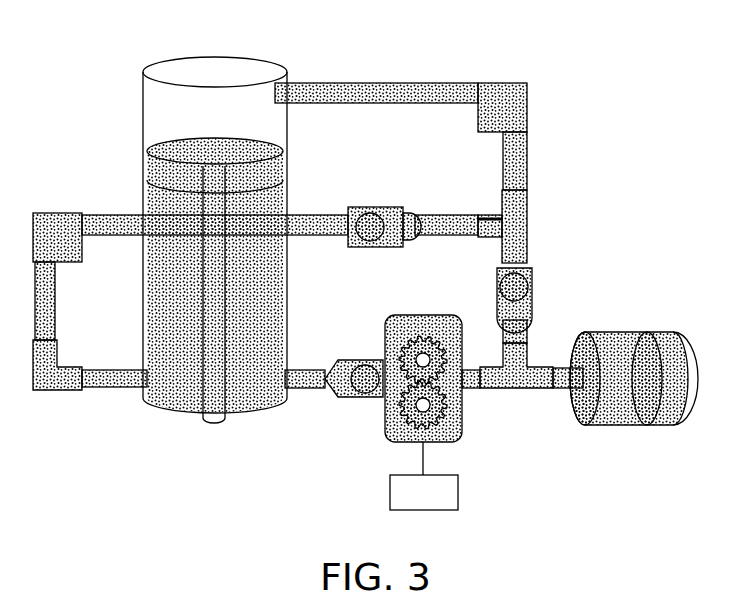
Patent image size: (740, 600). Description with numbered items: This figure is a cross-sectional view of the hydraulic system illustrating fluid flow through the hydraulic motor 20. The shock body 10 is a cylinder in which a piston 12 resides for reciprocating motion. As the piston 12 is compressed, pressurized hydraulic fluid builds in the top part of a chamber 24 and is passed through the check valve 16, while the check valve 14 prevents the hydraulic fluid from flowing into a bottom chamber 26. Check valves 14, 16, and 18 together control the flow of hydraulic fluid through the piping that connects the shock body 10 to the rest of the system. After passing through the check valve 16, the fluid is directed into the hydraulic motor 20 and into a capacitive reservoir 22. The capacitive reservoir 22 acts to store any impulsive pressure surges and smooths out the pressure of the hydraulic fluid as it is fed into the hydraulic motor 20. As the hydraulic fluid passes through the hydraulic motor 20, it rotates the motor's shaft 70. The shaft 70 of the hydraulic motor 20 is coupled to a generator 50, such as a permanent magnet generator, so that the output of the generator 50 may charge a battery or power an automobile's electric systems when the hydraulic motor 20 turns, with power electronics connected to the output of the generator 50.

The shock body 10 is at (155, 110).
The piston 12 is at (150, 167).
The check valve 14 is at (374, 208).
The check valve 16 is at (533, 290).
The check valve 18 is at (347, 398).
The hydraulic motor 20 is at (455, 440).
The capacitive reservoir 22 is at (663, 332).
The chamber 24 is at (258, 95).
The bottom chamber 26 is at (145, 305).
The generator 50 is at (460, 496).
The shaft 70 is at (417, 455).